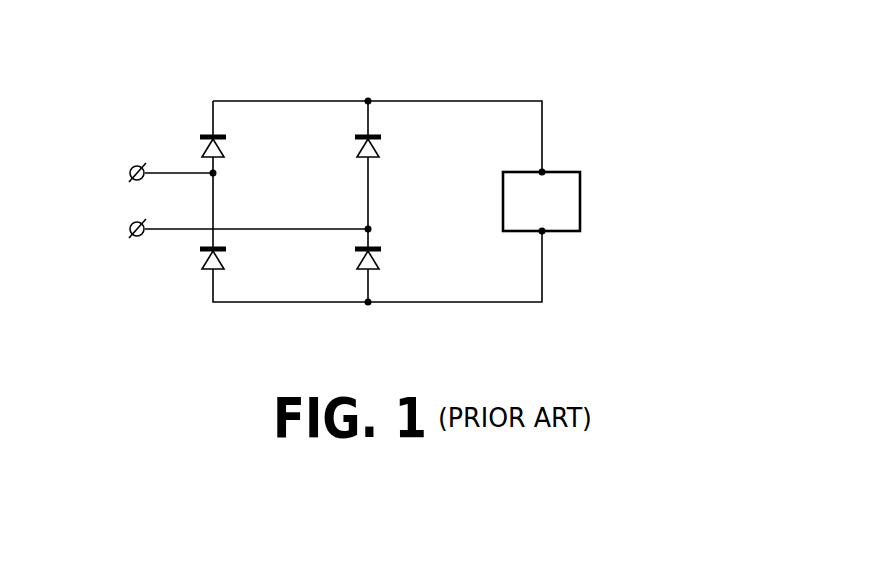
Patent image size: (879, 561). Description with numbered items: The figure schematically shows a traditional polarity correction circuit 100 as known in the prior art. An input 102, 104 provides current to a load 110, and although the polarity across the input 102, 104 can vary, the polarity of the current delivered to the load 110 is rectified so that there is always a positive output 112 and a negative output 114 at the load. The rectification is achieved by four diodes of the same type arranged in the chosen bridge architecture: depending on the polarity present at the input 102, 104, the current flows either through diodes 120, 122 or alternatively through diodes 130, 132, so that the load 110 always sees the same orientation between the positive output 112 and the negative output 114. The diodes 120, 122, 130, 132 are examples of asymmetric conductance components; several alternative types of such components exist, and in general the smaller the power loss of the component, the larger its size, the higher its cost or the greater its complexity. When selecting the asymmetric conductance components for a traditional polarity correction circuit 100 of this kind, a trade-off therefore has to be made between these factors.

The polarity correction circuit 100 is at (663, 98).
The input 102 is at (128, 168).
The input 104 is at (128, 224).
The load 110 is at (581, 203).
The positive output 112 is at (545, 170).
The negative output 114 is at (545, 234).
The diode 120 is at (224, 147).
The diode 122 is at (379, 259).
The diode 130 is at (379, 147).
The diode 132 is at (224, 259).